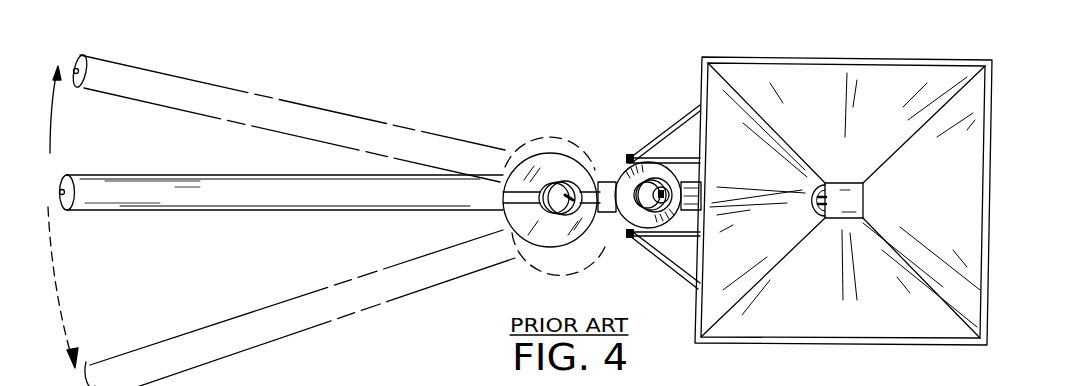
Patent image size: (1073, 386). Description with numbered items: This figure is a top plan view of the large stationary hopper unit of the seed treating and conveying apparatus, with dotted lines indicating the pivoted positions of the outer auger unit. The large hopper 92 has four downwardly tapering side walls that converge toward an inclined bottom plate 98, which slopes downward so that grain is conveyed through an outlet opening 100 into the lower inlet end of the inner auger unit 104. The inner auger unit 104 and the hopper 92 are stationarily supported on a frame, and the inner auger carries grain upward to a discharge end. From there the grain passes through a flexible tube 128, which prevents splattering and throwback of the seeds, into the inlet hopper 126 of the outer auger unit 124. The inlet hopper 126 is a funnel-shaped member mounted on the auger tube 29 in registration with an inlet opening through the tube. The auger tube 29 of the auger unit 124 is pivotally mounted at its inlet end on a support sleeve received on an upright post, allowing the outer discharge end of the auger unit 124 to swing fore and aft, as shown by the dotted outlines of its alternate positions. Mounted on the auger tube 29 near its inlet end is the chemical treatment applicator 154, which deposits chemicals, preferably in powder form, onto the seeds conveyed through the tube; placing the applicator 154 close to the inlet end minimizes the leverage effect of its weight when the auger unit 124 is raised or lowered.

The auger tube 29 is at (223, 185).
The auger unit 124 is at (240, 214).
The chemical treatment applicator 154 is at (557, 167).
The flexible tube 128 is at (637, 192).
The inlet hopper 126 is at (622, 222).
The inner auger unit 104 is at (703, 181).
The inclined bottom plate 98 is at (842, 197).
The outlet opening 100 is at (823, 210).
The large hopper 92 is at (988, 252).